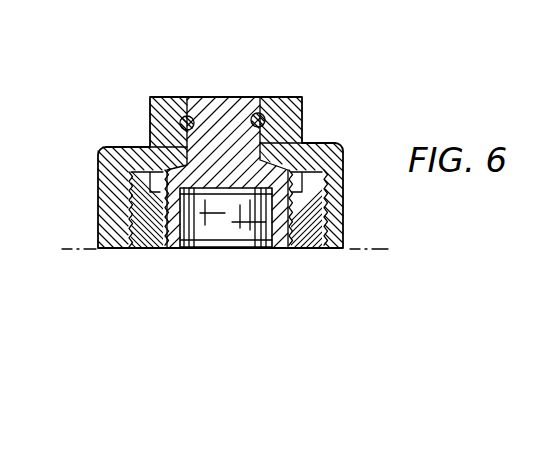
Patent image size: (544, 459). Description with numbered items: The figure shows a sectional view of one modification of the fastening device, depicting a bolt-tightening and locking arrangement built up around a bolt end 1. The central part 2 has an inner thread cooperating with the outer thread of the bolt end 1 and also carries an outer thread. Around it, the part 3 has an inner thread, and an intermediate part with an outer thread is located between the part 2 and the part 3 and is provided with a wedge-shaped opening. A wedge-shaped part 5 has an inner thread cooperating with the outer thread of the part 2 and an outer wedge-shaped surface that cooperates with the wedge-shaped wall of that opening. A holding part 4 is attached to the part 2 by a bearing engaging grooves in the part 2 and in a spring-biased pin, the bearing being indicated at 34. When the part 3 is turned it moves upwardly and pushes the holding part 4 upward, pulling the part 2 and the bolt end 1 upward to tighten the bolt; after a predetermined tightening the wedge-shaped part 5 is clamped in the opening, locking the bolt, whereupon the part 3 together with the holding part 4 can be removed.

The shaft 1 is at (235, 238).
The part 2 is at (213, 160).
The part 3 is at (103, 163).
The holding part 4 is at (290, 128).
The bolts 34 is at (332, 92).
The wedge-shaped part 5 is at (327, 228).